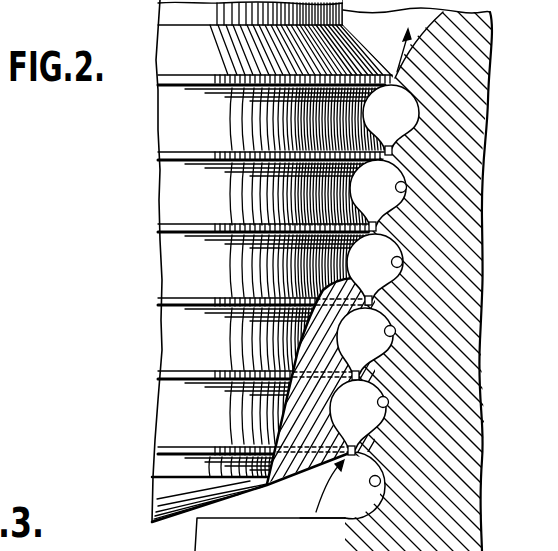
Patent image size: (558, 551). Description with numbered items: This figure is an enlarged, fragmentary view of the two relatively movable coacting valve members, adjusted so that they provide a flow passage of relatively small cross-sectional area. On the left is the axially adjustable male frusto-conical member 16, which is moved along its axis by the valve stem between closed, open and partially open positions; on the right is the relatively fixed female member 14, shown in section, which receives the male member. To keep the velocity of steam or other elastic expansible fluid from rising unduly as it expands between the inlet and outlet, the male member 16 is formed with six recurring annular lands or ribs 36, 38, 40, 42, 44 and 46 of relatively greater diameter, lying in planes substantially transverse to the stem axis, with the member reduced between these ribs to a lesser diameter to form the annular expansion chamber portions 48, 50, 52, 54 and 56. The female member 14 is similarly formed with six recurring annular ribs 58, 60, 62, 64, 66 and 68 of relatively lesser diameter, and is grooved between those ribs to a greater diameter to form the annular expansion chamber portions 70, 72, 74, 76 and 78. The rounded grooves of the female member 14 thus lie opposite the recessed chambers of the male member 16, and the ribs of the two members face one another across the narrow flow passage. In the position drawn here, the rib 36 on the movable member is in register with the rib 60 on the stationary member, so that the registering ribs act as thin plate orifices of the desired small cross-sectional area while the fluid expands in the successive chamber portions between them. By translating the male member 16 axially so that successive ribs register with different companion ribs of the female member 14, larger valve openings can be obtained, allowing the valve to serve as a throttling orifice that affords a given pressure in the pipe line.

The female member 14 is at (486, 40).
The male frusto-conical member 16 is at (197, 15).
The rib 36 is at (165, 449).
The rib 38 is at (172, 375).
The rib 40 is at (170, 302).
The rib 42 is at (170, 227).
The rib 44 is at (170, 156).
The rib 46 is at (168, 77).
The annular expansion chamber portion 48 is at (333, 401).
The annular expansion chamber portion 50 is at (341, 326).
The annular expansion chamber portion 52 is at (350, 251).
The annular expansion chamber portion 54 is at (356, 181).
The annular expansion chamber portion 56 is at (365, 108).
The rib 58 is at (346, 520).
The rib 60 is at (355, 451).
The rib 62 is at (359, 378).
The rib 64 is at (372, 302).
The rib 66 is at (376, 229).
The rib 68 is at (392, 151).
The annular expansion chamber portion 70 is at (381, 483).
The annular expansion chamber portion 72 is at (388, 405).
The annular expansion chamber portion 74 is at (395, 333).
The annular expansion chamber portion 76 is at (402, 265).
The annular expansion chamber portion 78 is at (406, 188).